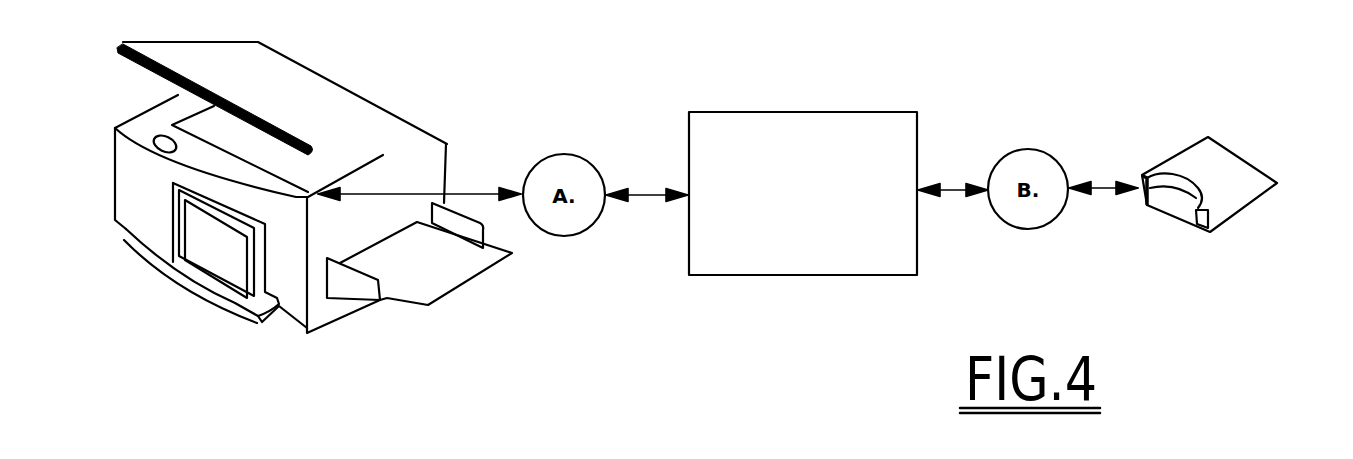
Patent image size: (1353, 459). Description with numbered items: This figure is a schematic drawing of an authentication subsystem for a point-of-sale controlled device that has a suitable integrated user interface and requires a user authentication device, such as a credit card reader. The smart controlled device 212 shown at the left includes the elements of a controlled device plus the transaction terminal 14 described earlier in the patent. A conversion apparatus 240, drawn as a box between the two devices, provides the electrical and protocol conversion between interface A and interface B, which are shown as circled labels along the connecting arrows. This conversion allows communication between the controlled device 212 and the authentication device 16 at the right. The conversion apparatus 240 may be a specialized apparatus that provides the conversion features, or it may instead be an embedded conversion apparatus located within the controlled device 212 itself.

The transaction terminal 14 is at (289, 204).
The smart controlled device 212 is at (358, 107).
The conversion apparatus 240 is at (823, 125).
The authentication device 16 is at (1230, 167).